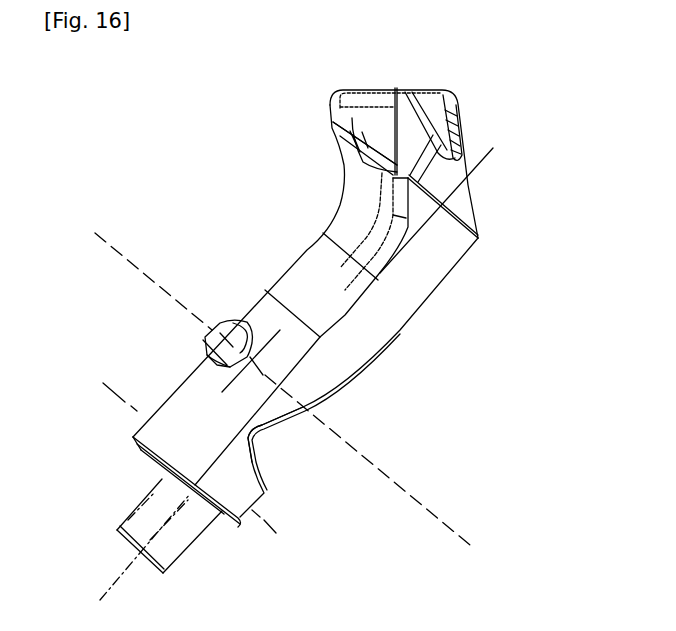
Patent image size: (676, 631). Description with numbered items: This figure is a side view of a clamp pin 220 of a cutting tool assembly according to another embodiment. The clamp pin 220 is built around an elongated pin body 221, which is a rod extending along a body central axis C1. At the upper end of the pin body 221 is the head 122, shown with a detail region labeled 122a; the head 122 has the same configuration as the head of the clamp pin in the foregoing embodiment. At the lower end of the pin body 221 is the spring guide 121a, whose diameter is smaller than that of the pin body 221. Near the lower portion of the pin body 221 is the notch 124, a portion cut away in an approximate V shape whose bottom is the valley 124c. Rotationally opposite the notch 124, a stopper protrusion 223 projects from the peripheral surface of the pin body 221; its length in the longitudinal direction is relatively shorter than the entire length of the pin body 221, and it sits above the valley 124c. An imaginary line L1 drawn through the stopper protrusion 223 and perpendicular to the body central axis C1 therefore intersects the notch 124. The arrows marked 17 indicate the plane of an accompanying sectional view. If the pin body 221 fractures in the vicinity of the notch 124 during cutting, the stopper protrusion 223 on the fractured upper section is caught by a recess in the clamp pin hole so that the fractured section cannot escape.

The clamp pin 220 is at (186, 147).
The head 122 is at (466, 126).
The head rim 122a is at (333, 122).
The body central axis C1 is at (453, 210).
The pin body 221 is at (266, 274).
The notch 124 is at (298, 430).
The valley 124c is at (258, 432).
The stopper protrusion 223 is at (206, 328).
The spring guide 121a is at (178, 542).
The section line 17 is at (116, 387).
The imaginary line L1 is at (282, 377).